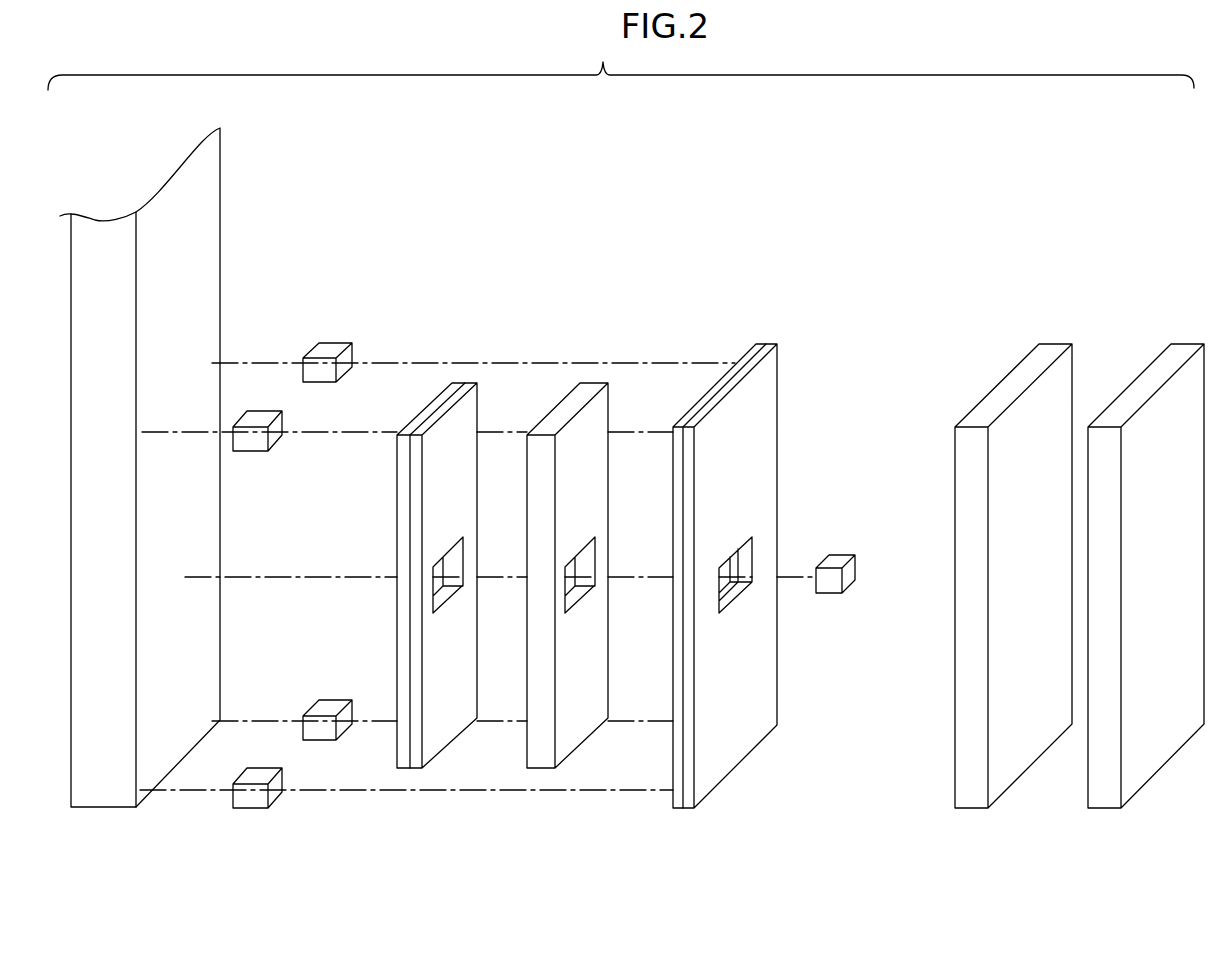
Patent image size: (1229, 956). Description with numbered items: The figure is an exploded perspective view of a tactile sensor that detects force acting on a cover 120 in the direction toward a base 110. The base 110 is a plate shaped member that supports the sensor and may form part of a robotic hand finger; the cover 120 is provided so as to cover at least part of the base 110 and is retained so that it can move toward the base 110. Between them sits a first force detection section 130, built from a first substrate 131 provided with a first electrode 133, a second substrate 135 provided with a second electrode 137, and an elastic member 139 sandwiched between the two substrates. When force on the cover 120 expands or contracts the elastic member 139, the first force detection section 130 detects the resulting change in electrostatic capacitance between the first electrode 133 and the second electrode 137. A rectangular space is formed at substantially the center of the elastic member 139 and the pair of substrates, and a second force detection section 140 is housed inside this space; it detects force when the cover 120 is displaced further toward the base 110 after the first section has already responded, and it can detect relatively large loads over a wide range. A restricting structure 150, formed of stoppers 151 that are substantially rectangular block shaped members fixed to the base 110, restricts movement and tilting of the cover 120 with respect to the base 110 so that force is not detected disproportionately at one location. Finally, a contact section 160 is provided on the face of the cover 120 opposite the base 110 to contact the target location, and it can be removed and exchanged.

The base 110 is at (100, 797).
The cover 120 is at (1037, 358).
The first force detection section 130 is at (808, 252).
The first substrate 131 is at (775, 390).
The first electrode 133 is at (722, 380).
The second substrate 135 is at (423, 408).
The second electrode 137 is at (475, 403).
The elastic member 139 is at (583, 392).
The second force detection section 140 is at (828, 595).
The restricting structure 150 is at (294, 193).
The stoppers 151 is at (263, 415).
The contact section 160 is at (1170, 358).